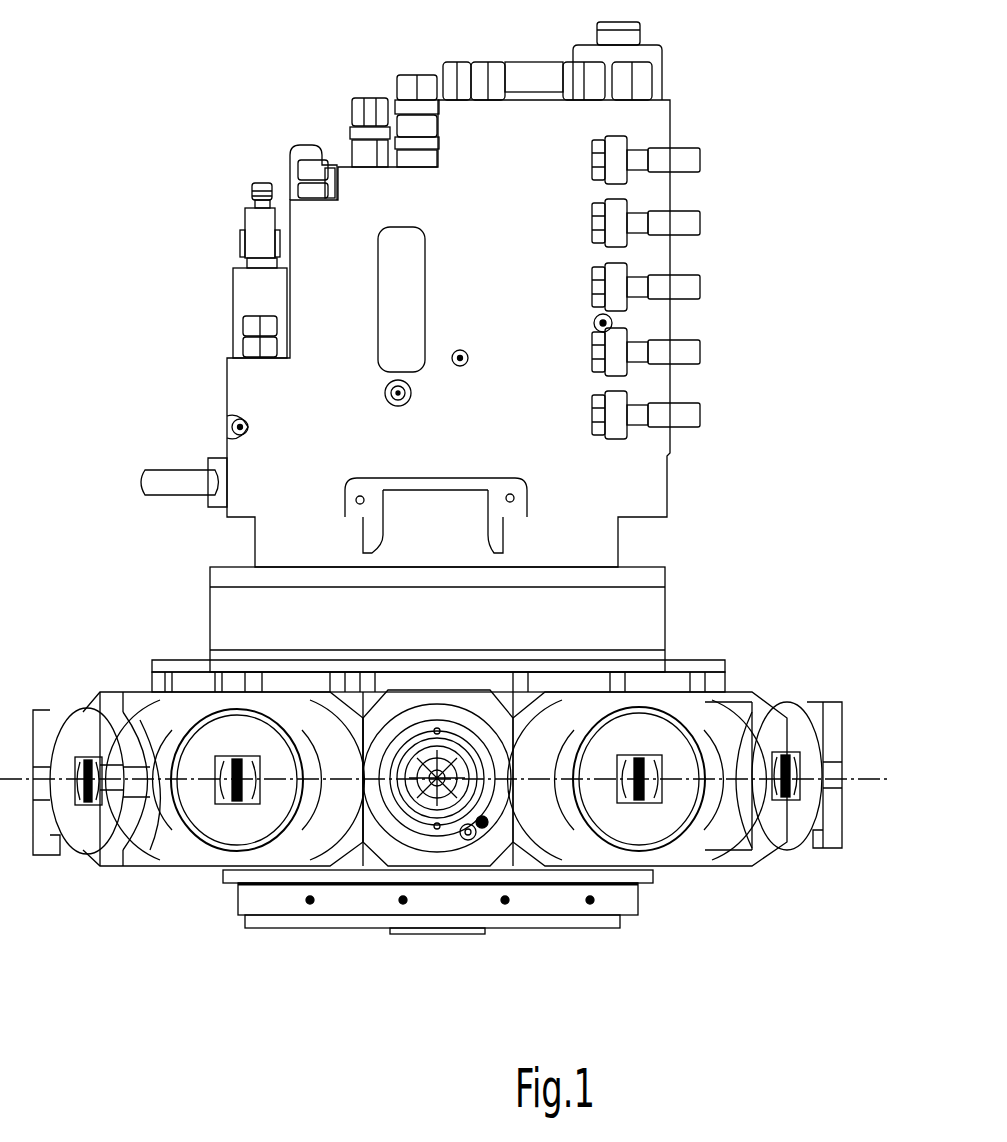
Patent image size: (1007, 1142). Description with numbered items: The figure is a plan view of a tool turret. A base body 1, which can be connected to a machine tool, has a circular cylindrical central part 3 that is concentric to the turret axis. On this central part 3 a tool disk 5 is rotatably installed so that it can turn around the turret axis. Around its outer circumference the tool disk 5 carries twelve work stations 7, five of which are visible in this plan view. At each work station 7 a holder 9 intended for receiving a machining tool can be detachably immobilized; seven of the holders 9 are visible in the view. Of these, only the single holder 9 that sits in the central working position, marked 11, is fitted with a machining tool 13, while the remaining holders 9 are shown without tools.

The base body 1 is at (260, 397).
The circular cylindrical central part 3 is at (655, 612).
The tool disk 5 is at (235, 662).
The work stations 7 is at (192, 683).
The holder 9 is at (67, 712).
The holder in central working position 11 is at (443, 860).
The machining tool 13 is at (447, 800).